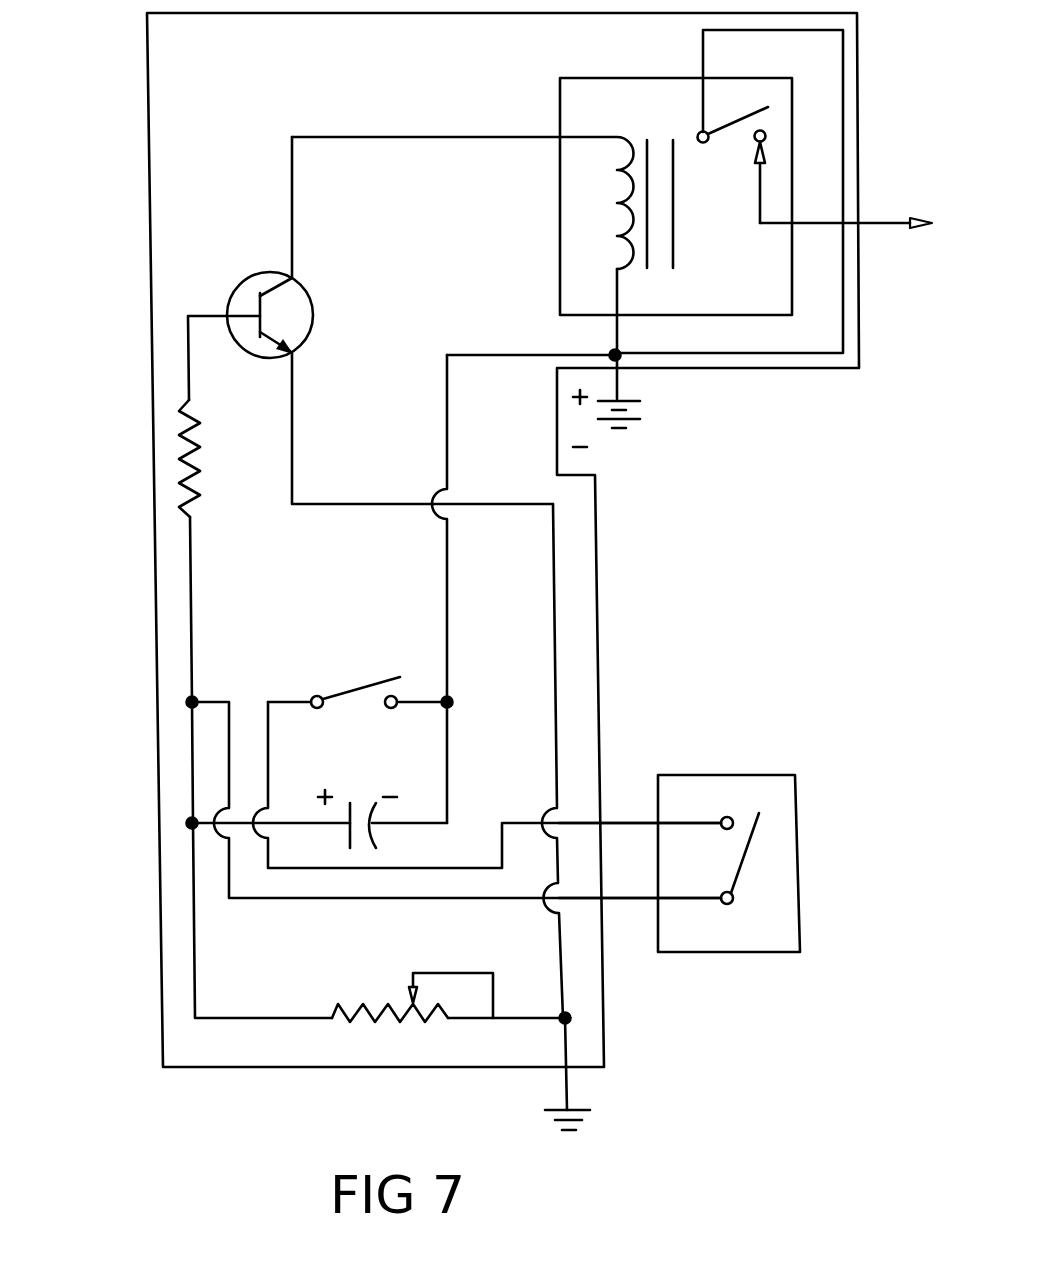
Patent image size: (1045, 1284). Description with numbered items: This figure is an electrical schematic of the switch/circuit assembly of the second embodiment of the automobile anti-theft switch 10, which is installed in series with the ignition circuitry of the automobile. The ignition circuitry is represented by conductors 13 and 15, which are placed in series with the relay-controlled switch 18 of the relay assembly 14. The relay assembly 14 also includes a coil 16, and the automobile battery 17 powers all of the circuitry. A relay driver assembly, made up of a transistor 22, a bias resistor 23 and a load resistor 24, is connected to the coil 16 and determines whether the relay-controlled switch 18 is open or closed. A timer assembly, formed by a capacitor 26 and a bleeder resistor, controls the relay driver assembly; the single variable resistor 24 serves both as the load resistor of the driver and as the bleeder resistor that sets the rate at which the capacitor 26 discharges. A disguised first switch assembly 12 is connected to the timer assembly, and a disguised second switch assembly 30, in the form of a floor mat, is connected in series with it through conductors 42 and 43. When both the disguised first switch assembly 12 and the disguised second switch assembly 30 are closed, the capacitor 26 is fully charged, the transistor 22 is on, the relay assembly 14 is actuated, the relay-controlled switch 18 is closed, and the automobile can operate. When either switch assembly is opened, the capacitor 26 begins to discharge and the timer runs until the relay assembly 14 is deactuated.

The automobile anti-theft switch 10 is at (137, 95).
The disguised first switch assembly 12 is at (370, 670).
The conductor 13 is at (777, 33).
The relay assembly 14 is at (560, 112).
The conductor 15 is at (883, 228).
The coil 16 is at (617, 207).
The automobile battery 17 is at (642, 440).
The relay-controlled switch 18 is at (727, 166).
The transistor 22 is at (247, 268).
The bias resistor 23 is at (205, 442).
The variable resistor 24 is at (365, 1003).
The capacitor 26 is at (364, 793).
The disguised second switch assembly 30 is at (807, 847).
The conductor 42 is at (620, 822).
The conductor 43 is at (632, 898).